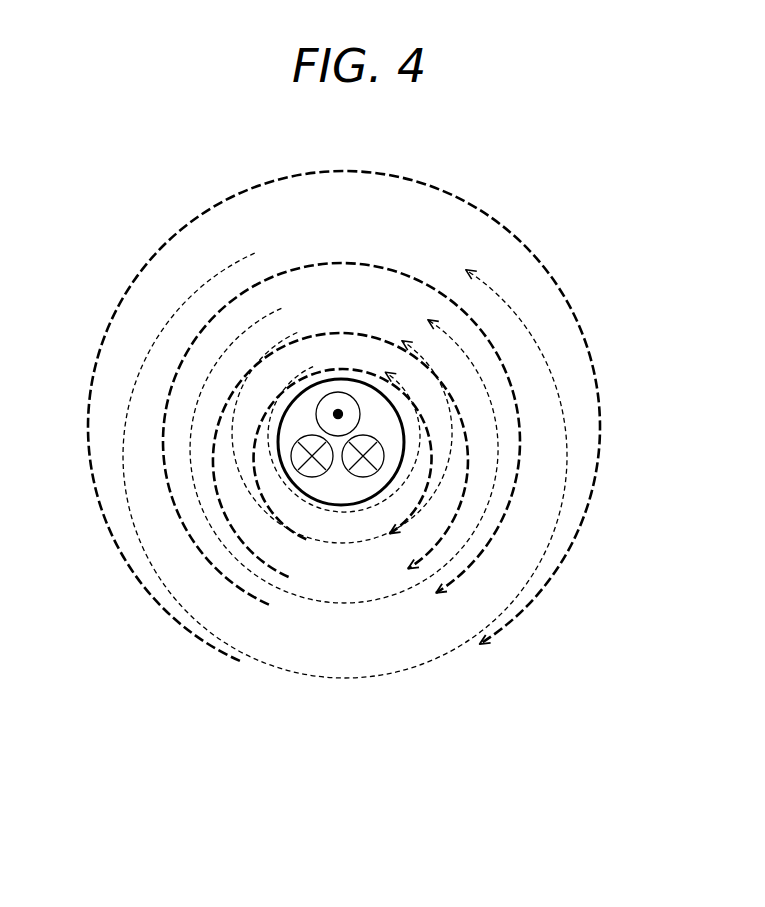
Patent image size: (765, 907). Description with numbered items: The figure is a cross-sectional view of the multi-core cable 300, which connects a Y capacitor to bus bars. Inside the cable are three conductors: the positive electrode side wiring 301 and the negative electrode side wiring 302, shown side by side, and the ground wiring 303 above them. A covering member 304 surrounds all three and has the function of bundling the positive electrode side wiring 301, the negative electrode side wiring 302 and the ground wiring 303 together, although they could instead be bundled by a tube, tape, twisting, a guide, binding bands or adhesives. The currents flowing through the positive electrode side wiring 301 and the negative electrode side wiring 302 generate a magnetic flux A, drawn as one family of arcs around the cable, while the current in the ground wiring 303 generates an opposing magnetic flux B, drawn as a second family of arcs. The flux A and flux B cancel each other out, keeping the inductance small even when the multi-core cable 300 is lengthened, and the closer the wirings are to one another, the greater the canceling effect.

The multi-core cable 300 is at (277, 408).
The positive electrode side wiring 301 is at (292, 457).
The negative electrode side wiring 302 is at (384, 457).
The ground wiring 303 is at (340, 392).
The covering member 304 is at (297, 417).
The magnetic flux A is at (601, 413).
The magnetic flux B is at (346, 681).